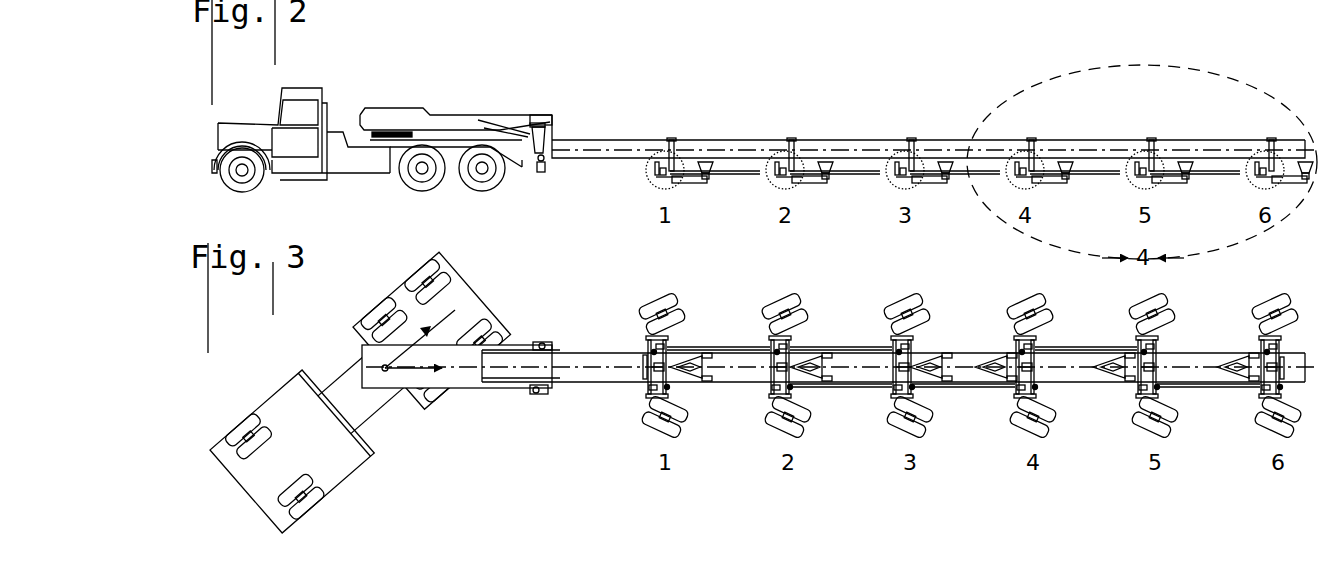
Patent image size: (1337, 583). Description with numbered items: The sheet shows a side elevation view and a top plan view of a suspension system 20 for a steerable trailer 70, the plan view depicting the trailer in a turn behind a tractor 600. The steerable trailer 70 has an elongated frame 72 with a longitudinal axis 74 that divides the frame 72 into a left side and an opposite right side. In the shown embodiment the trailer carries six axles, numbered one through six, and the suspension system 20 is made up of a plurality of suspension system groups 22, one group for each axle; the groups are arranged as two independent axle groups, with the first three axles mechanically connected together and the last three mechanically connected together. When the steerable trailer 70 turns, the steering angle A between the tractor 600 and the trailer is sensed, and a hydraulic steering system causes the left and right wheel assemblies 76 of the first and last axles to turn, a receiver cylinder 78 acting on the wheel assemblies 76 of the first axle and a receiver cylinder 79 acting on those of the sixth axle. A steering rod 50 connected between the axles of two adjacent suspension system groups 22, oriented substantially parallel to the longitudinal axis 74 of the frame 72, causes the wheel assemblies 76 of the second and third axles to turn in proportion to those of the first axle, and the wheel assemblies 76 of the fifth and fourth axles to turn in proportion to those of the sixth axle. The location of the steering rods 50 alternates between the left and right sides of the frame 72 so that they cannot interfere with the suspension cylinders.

In FIG. 2, the suspension system 20 is at (1108, 80).
In FIG. 2, the suspension system group 22 is at (680, 131).
In FIG. 2, the steering rod 50 is at (752, 175).
In FIG. 3, the steering rod 50 is at (725, 348).
In FIG. 2, the steerable trailer 70 is at (935, 134).
In FIG. 2, the frame 72 is at (628, 140).
In FIG. 2, the longitudinal axis 74 is at (610, 151).
In FIG. 3, the tractor 600 is at (481, 268).
In FIG. 3, the wheel assembly 76 is at (662, 332).
In FIG. 3, the receiver cylinder 78 is at (644, 354).
In FIG. 3, the receiver cylinder 79 is at (1284, 372).